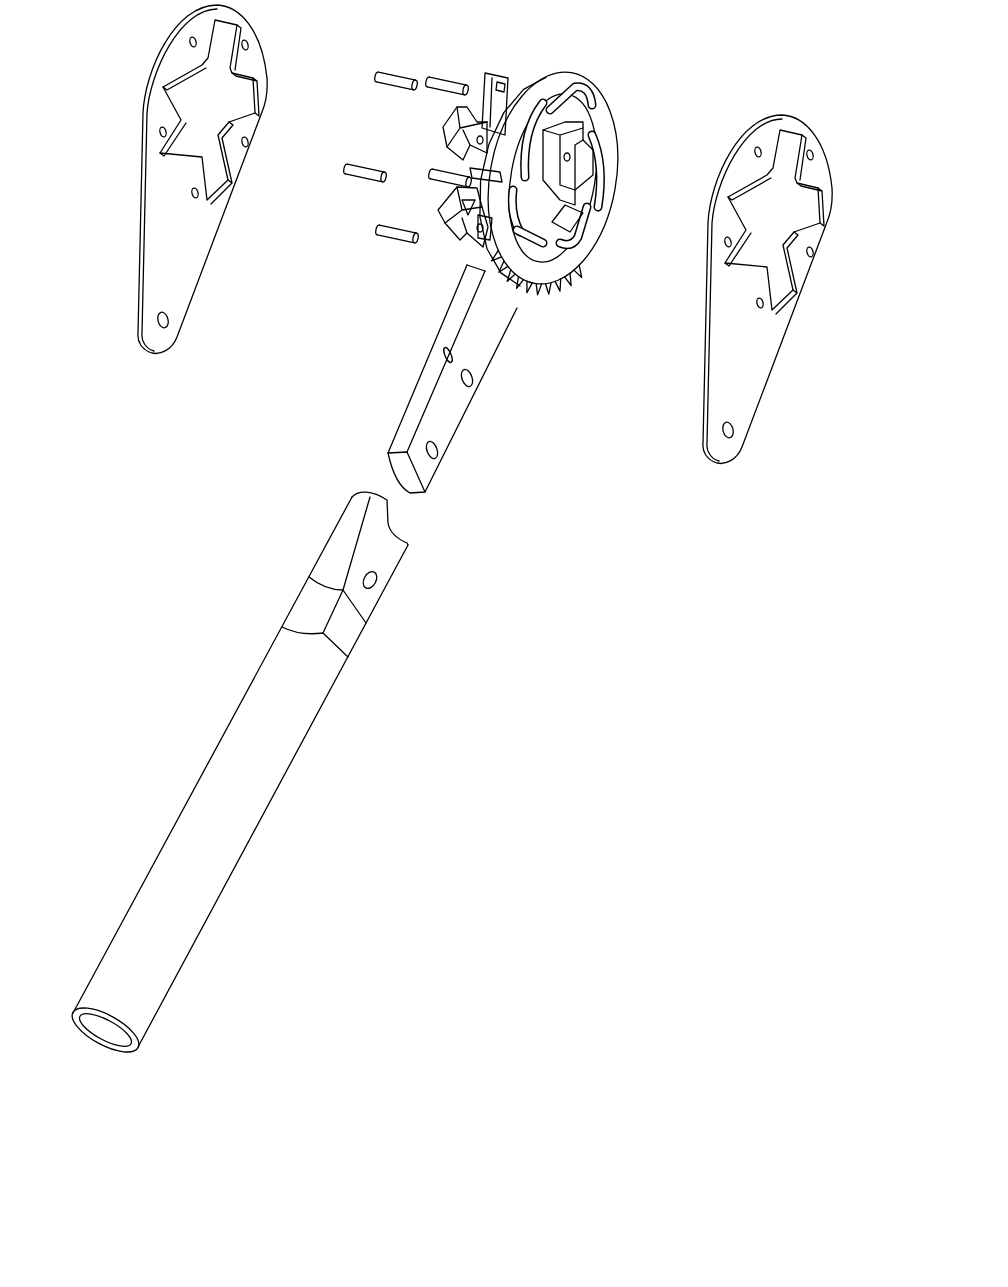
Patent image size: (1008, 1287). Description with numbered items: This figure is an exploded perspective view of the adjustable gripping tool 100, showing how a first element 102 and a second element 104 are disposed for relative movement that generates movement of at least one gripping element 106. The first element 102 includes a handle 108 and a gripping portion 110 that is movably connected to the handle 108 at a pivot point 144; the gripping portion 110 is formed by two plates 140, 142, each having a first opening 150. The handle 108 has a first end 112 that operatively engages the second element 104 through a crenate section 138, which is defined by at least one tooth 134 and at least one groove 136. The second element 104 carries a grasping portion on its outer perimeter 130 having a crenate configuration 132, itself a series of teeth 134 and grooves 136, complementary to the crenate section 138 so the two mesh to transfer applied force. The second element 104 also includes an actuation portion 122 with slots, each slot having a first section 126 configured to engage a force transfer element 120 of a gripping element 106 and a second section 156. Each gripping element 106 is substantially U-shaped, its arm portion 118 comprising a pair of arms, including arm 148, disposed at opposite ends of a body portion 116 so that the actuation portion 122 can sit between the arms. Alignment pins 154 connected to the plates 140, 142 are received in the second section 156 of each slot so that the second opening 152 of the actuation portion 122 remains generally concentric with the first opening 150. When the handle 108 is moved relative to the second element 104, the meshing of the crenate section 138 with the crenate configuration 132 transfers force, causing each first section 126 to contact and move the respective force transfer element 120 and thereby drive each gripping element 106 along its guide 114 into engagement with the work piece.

The adjustable gripping tool 100 is at (607, 727).
The first element 102 is at (457, 578).
The second element 104 is at (625, 107).
The gripping element 106 is at (516, 76).
The handle 108 is at (306, 663).
The gripping portion 110 is at (112, 381).
The first end 112 is at (522, 305).
The guide 114 is at (228, 53).
The body portion 116 is at (470, 170).
The arm portion 118 is at (470, 215).
The force transfer element 120 is at (470, 115).
The actuation portion 122 is at (608, 150).
The first section 126 is at (570, 90).
The outer perimeter 130 is at (553, 78).
The crenate configuration 132 is at (563, 290).
The teeth 134 is at (578, 282).
The grooves 136 is at (575, 258).
The crenate section 138 is at (535, 296).
The plate 140 is at (753, 357).
The plate 142 is at (190, 248).
The pivot point 144 is at (168, 322).
The arm 148 is at (492, 75).
The first opening 150 is at (217, 102).
The second opening 152 is at (545, 193).
The alignment pins 154 is at (393, 233).
The second section 156 is at (600, 177).